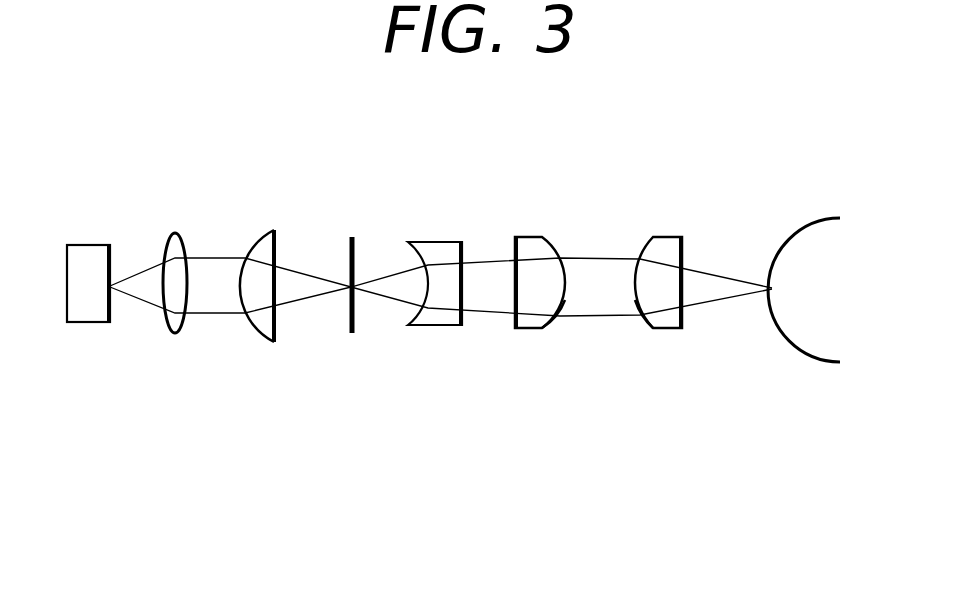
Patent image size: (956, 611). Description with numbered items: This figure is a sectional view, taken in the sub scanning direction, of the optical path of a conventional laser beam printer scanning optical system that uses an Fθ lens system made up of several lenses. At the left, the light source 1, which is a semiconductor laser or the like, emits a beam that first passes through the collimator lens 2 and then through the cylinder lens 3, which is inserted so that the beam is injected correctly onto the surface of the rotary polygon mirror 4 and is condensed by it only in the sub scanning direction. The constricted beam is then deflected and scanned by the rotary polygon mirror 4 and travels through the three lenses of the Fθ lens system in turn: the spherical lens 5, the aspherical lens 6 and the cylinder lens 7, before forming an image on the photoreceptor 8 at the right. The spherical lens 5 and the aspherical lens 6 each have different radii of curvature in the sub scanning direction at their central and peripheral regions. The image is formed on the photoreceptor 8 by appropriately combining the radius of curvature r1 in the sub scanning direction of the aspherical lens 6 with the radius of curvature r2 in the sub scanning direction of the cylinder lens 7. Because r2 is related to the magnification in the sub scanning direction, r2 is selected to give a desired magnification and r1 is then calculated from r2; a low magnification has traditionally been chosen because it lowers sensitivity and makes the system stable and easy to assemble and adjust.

The light source 1 is at (88, 243).
The collimator lens 2 is at (175, 232).
The cylinder lens 3 is at (272, 230).
The rotary polygon mirror 4 is at (352, 237).
The spherical lens 5 is at (440, 242).
The aspherical lens 6 is at (525, 237).
The cylinder lens 7 is at (668, 237).
The photoreceptor 8 is at (822, 218).
The radius of curvature in the sub scanning direction r1 is at (560, 337).
The radius of curvature in the sub scanning direction r2 is at (639, 337).